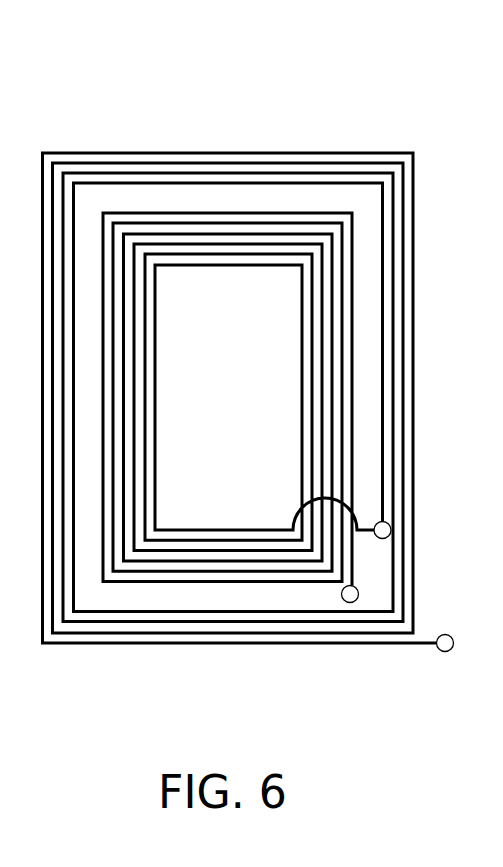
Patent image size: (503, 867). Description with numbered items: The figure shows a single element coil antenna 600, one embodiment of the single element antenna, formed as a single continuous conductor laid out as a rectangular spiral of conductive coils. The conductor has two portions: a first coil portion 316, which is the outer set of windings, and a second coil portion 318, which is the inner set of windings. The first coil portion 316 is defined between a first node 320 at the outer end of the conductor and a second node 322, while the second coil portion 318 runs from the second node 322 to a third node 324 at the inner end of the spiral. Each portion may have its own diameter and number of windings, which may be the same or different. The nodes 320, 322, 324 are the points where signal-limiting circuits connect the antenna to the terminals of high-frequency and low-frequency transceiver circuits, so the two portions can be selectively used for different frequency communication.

The single element coil antenna 600 is at (188, 115).
The first coil portion 316 is at (415, 314).
The second coil portion 318 is at (157, 400).
The first node 320 is at (449, 634).
The second node 322 is at (389, 524).
The third node 324 is at (358, 587).